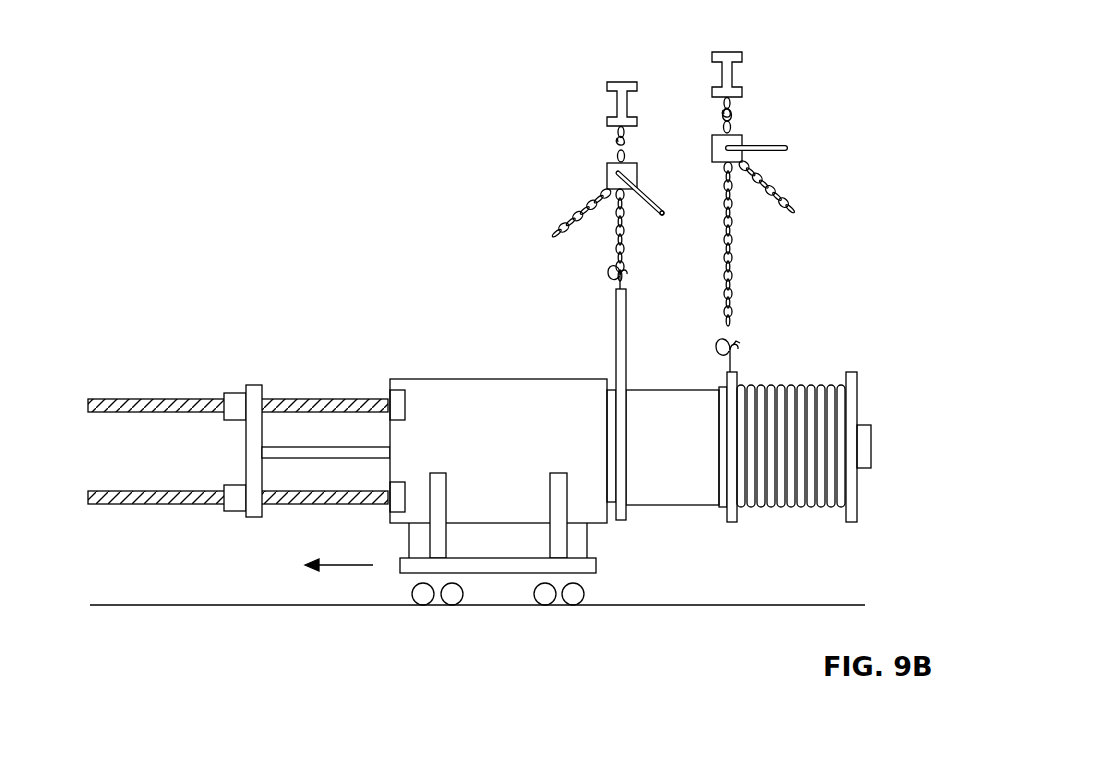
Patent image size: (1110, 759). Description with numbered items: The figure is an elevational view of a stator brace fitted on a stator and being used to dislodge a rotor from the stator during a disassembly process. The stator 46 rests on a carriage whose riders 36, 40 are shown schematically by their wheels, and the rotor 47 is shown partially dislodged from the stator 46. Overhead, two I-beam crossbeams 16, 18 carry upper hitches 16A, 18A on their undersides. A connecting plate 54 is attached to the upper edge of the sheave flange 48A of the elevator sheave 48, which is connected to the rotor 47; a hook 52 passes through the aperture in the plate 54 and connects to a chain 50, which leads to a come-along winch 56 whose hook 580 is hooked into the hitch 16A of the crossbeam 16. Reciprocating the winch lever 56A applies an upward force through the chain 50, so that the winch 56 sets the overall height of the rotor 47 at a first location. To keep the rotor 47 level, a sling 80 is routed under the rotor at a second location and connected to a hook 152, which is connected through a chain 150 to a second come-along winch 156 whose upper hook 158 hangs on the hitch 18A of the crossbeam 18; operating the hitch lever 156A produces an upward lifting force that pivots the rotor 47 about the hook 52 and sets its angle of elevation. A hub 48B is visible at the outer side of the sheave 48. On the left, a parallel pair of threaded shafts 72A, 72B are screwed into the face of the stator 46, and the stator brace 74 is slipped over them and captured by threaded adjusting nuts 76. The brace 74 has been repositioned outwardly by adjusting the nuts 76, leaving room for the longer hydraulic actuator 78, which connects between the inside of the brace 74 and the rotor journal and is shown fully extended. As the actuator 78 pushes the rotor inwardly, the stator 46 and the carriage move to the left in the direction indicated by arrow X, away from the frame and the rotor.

The crossbeam 16 is at (728, 52).
The upper hitch 16A is at (737, 107).
The hook 580 is at (740, 120).
The come-along winch 56 is at (712, 148).
The winch lever 56A is at (783, 157).
The chain 50 is at (735, 255).
The connecting plate 54 is at (737, 345).
The hook 52 is at (745, 350).
The elevator sheave 48 is at (810, 507).
The sheave flange 48A is at (732, 522).
The spool hub 48B is at (872, 443).
The rotor 47 is at (673, 493).
The stator 46 is at (440, 378).
The sling 80 is at (615, 340).
The crossbeam 18 is at (623, 80).
The upper hitch 18A is at (610, 140).
The come-along winch 156 is at (607, 175).
The upper hook 158 is at (637, 147).
The hitch lever 156A is at (655, 217).
The chain 150 is at (612, 228).
The hook 152 is at (608, 270).
The threaded shaft 72A is at (362, 398).
The threaded shaft 72B is at (300, 505).
The stator brace 74 is at (252, 385).
The threaded adjusting nuts 76 is at (226, 420).
The hydraulic actuator 78 is at (316, 447).
The rider 36 is at (464, 592).
The rider 40 is at (586, 592).
The arrow X is at (347, 565).